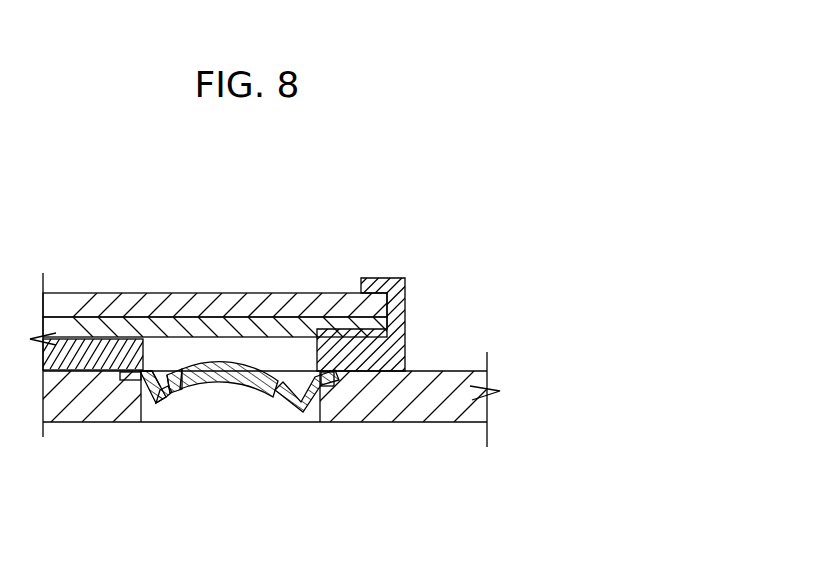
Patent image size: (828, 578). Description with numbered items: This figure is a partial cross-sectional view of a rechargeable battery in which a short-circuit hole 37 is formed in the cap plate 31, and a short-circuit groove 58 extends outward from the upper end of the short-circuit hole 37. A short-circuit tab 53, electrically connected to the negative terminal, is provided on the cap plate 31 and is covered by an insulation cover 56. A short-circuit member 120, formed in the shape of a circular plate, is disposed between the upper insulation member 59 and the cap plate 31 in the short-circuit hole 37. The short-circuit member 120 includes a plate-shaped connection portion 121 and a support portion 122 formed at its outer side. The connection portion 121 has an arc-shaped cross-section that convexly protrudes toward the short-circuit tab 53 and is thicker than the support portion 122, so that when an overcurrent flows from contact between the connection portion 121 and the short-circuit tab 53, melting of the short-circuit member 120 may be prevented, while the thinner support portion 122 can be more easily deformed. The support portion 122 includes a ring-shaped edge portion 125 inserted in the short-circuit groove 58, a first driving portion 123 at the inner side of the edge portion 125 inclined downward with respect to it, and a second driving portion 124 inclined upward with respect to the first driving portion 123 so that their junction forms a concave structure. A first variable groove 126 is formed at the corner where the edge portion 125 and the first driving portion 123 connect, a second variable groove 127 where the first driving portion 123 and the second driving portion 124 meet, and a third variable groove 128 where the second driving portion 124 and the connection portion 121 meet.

The cap plate 31 is at (415, 405).
The short-circuit hole 37 is at (306, 422).
The short-circuit tab 53 is at (75, 330).
The insulation cover 56 is at (310, 308).
The short-circuit groove 58 is at (340, 376).
The upper insulation member 59 is at (397, 322).
The short-circuit member 120 is at (268, 402).
The connection portion 121 is at (221, 388).
The support portion 122 is at (149, 461).
The first driving portion 123 is at (153, 400).
The second driving portion 124 is at (170, 393).
The edge portion 125 is at (145, 372).
The first variable groove 126 is at (143, 370).
The second variable groove 127 is at (153, 375).
The third variable groove 128 is at (170, 380).